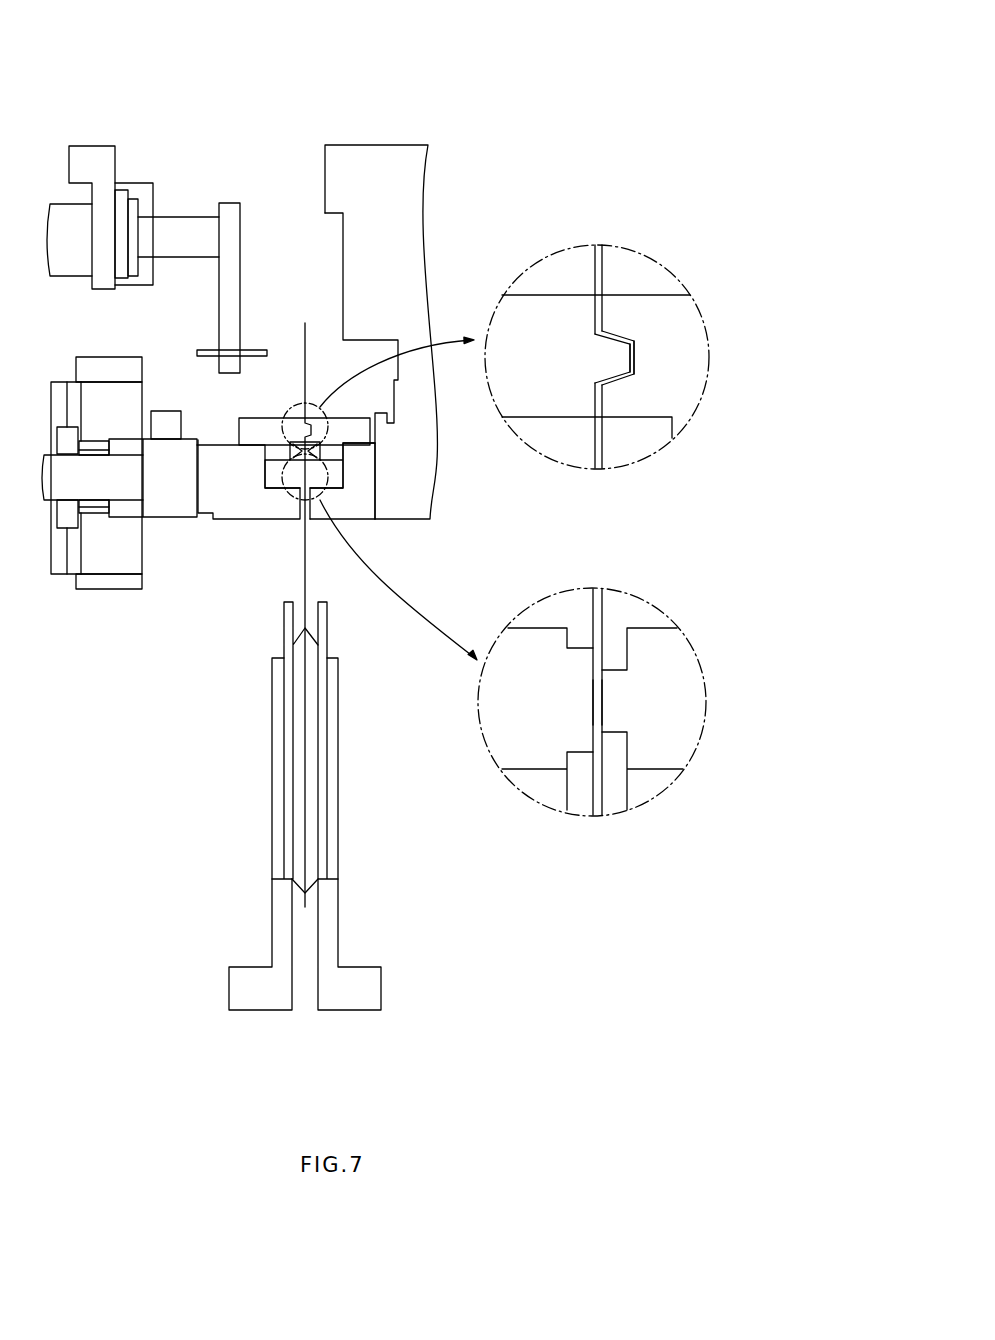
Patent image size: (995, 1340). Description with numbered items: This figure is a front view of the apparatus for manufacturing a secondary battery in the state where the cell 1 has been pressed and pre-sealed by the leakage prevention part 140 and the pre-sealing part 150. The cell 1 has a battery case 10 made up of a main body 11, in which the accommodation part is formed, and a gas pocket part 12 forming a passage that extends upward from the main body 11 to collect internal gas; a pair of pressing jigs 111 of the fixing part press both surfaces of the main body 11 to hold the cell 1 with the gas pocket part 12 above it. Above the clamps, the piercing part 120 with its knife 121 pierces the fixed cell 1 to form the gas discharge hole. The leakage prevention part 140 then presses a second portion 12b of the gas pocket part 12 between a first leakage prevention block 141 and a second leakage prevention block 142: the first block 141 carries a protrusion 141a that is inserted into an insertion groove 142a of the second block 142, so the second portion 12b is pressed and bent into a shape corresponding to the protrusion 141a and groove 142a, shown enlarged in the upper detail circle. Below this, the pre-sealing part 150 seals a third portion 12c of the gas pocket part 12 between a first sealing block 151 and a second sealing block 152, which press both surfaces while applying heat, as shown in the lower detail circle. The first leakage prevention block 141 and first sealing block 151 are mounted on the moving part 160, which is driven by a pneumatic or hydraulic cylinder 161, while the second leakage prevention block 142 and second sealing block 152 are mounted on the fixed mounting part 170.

The cell 1 is at (435, 627).
The battery case 10 is at (151, 689).
The main body 11 is at (298, 812).
The gas pocket part 12 is at (463, 576).
The second portion 12b is at (645, 356).
The third portion 12c is at (589, 700).
The pressing jig 111 is at (332, 942).
The piercing part 120 is at (244, 218).
The knife 121 is at (257, 353).
The leakage prevention part 140 is at (308, 15).
The first leakage prevention block 141 is at (394, 257).
The protrusion 141a is at (627, 357).
The second leakage prevention block 142 is at (521, 302).
The insertion groove 142a is at (638, 345).
The pre-sealing part 150 is at (438, 15).
The first sealing block 151 is at (548, 640).
The second sealing block 152 is at (658, 663).
The moving part 160 is at (208, 498).
The cylinder 161 is at (120, 487).
The mounting part 170 is at (419, 531).